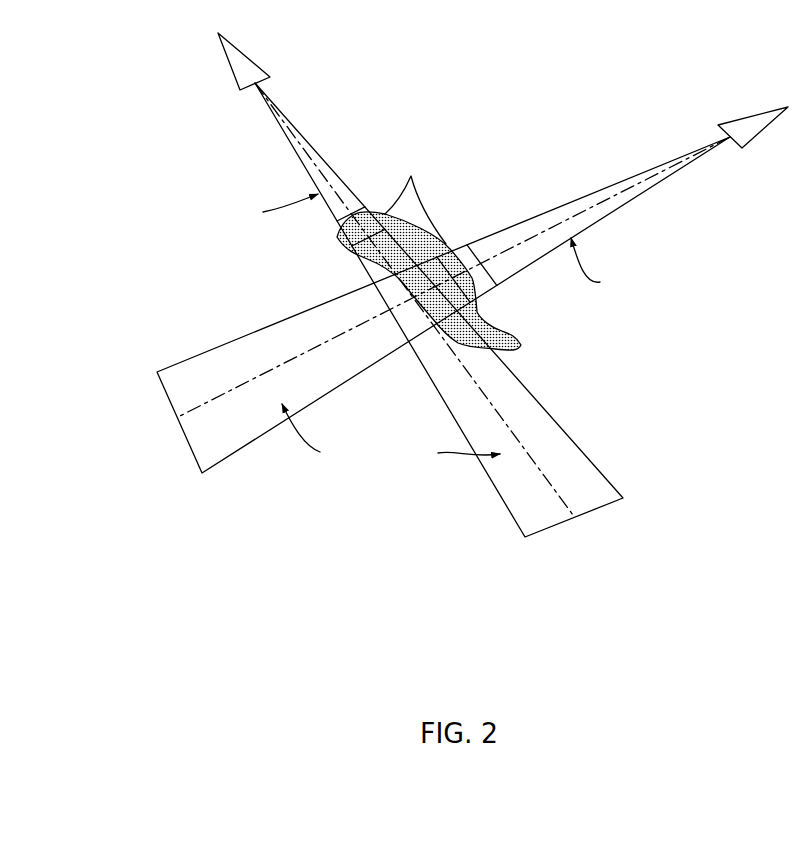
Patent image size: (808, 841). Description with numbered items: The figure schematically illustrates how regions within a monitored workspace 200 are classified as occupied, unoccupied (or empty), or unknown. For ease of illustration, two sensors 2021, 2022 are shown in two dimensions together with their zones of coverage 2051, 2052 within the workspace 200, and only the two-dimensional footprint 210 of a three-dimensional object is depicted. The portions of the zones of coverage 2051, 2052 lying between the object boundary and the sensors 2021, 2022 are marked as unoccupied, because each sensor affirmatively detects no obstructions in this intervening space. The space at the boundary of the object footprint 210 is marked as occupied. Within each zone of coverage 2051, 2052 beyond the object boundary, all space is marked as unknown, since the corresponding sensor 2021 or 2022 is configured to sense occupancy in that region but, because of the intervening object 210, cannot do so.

The workspace 200 is at (474, 80).
The first sensor 2021 is at (253, 63).
The second sensor 2022 is at (740, 121).
The first zone of coverage 2051 is at (311, 146).
The second zone of coverage 2052 is at (663, 182).
The 2D footprint of object 210 is at (518, 336).